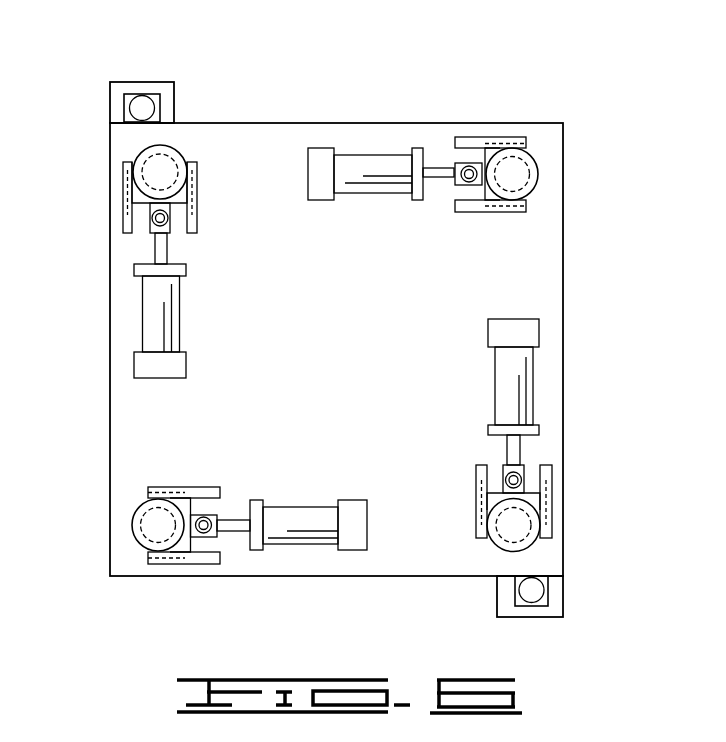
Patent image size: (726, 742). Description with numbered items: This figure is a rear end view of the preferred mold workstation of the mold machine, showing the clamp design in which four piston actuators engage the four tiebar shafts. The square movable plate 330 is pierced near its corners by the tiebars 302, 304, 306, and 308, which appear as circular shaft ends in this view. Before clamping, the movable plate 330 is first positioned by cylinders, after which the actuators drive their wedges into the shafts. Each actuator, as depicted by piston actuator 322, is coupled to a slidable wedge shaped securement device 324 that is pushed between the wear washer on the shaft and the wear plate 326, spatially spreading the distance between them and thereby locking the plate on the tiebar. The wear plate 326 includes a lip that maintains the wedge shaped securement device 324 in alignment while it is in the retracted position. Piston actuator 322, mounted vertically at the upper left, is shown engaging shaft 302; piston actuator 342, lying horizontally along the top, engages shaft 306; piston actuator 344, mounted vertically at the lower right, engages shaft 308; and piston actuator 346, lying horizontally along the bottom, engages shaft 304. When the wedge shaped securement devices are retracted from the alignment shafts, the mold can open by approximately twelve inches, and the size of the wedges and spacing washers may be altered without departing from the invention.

The tiebar 302 is at (167, 167).
The tiebar 304 is at (153, 523).
The tiebar 306 is at (520, 174).
The tiebar 308 is at (520, 533).
The piston actuator 322 is at (142, 322).
The wedge shaped securement device 324 is at (183, 195).
The wear plate 326 is at (128, 225).
The movable plate 330 is at (564, 248).
The piston actuator 342 is at (143, 82).
The piston actuator 344 is at (532, 389).
The piston actuator 346 is at (302, 544).